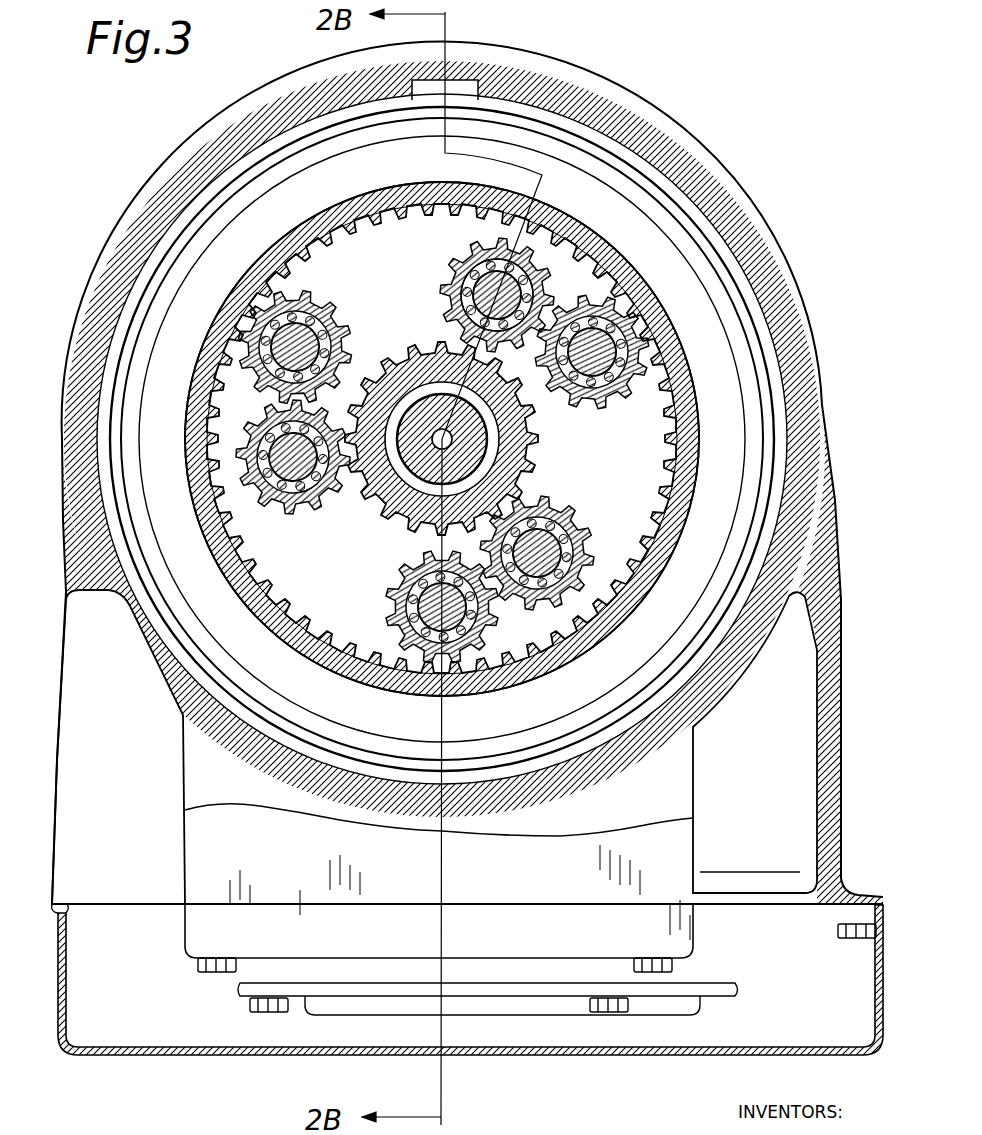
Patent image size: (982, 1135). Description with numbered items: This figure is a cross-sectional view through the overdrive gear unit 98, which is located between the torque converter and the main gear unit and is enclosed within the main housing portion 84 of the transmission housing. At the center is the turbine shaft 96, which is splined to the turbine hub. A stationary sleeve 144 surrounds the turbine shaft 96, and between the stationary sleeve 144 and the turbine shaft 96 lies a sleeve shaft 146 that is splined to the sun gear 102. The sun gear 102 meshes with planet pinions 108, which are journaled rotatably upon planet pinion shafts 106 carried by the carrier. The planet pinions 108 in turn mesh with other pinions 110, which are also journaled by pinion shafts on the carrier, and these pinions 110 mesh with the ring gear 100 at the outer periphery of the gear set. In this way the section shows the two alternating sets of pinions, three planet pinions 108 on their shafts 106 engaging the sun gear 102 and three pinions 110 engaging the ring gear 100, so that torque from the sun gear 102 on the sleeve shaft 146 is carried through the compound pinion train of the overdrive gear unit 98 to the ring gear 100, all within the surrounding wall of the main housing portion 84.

The main housing portion 84 is at (786, 297).
The overdrive gear unit 98 is at (693, 348).
The ring gear 100 is at (690, 372).
The pinions 110 is at (690, 408).
The planet pinions 108 is at (452, 276).
The planet pinion shafts 106 is at (448, 298).
The sun gear 102 is at (545, 427).
The turbine shaft 96 is at (520, 452).
The sleeve shaft 146 is at (522, 472).
The stationary sleeve 144 is at (352, 627).